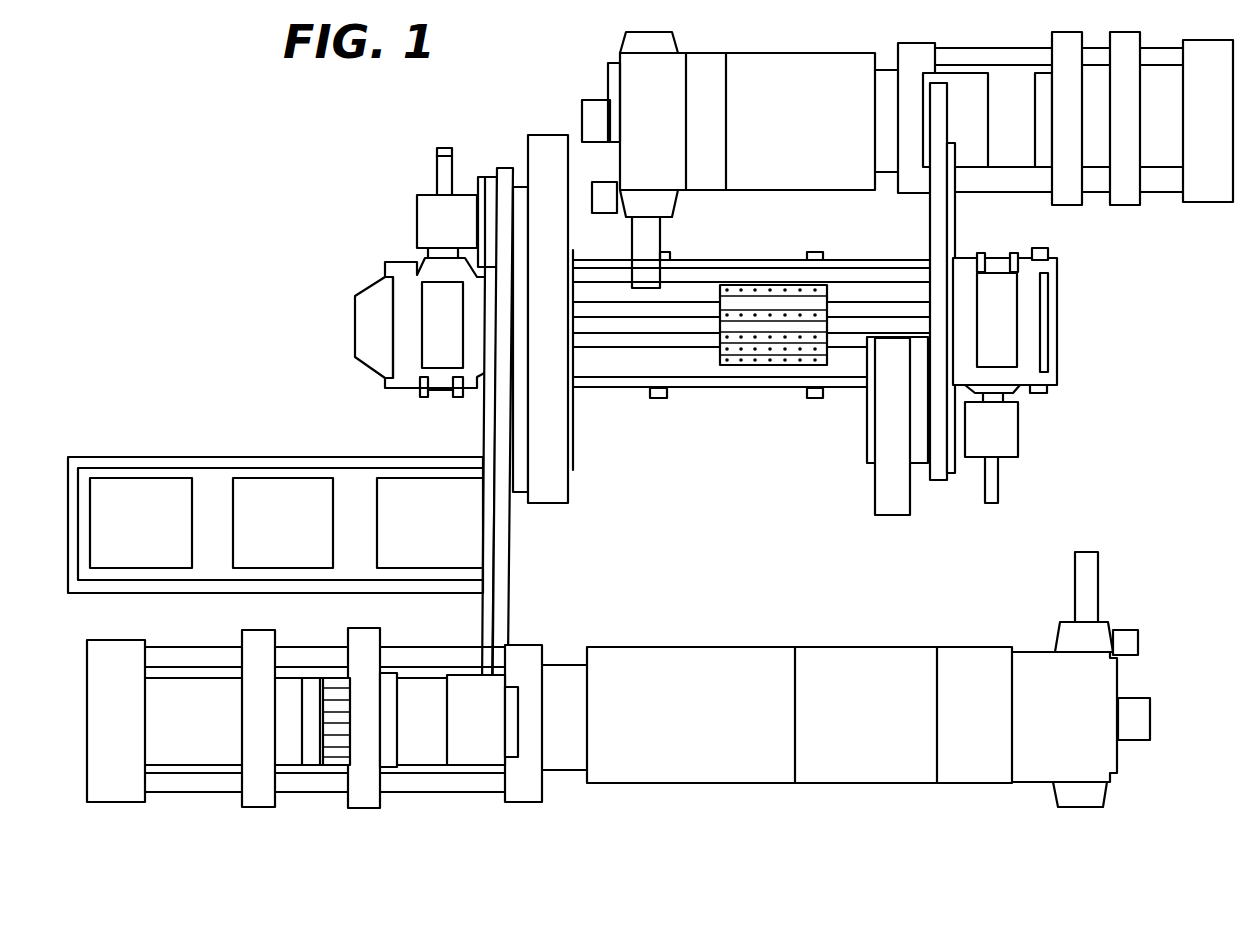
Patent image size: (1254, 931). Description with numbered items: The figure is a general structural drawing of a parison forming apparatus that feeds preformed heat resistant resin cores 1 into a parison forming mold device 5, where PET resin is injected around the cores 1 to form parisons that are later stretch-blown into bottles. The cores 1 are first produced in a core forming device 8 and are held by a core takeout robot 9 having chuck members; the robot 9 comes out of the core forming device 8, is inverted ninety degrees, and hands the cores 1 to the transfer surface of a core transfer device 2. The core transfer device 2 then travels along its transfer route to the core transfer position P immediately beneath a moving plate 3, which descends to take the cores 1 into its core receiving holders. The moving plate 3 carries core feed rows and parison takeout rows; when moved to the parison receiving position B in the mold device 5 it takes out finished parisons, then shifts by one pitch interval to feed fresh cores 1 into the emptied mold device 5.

The core 1 is at (768, 286).
The core transfer device 2 is at (772, 398).
The moving plate 3 is at (380, 306).
The parison forming mold device 5 is at (306, 806).
The core forming device 8 is at (1107, 216).
The core takeout robot 9 is at (928, 492).
The parison receiving position B is at (423, 737).
The core transfer position P is at (432, 402).